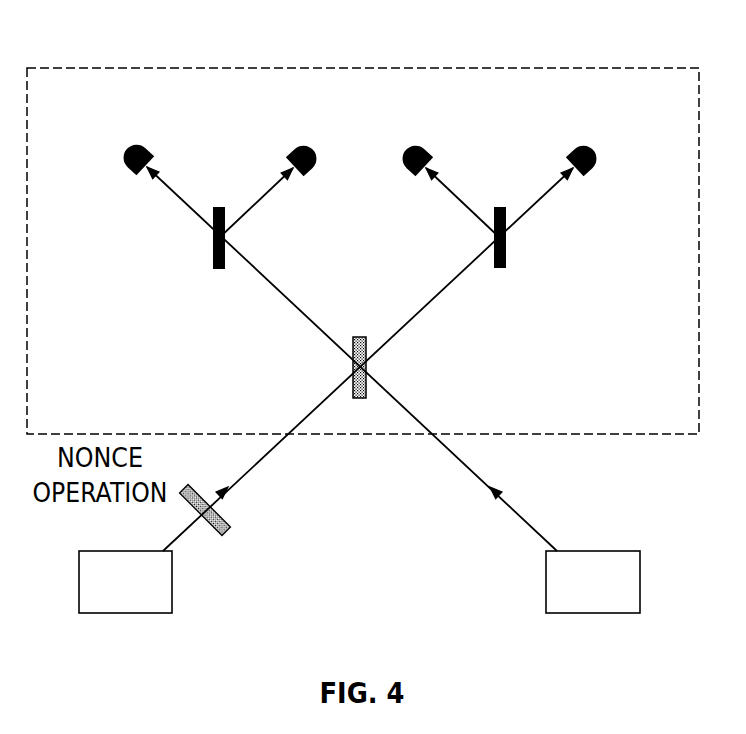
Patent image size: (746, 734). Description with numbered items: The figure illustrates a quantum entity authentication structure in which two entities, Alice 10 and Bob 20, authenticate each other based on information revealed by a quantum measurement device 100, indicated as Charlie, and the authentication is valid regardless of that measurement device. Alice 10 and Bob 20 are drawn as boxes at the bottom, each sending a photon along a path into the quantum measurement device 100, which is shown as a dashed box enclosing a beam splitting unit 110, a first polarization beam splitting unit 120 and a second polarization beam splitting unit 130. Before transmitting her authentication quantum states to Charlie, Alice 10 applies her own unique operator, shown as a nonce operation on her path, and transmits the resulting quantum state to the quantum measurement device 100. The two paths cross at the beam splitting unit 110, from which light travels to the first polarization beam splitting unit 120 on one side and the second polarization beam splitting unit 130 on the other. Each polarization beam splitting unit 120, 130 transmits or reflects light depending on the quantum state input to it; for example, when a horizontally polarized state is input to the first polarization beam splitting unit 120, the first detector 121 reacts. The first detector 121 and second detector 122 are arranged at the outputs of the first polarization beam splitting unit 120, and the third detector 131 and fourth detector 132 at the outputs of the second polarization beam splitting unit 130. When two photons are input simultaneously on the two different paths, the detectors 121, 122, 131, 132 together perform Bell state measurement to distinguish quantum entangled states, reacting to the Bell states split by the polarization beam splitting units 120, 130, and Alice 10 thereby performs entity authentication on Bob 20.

The quantum measurement device 100 is at (367, 68).
The entity 10 is at (172, 582).
The entity 20 is at (640, 582).
The beam splitting unit 110 is at (359, 337).
The first polarization beam splitting unit 120 is at (213, 250).
The detector D1 121 is at (119, 162).
The detector D2 122 is at (316, 172).
The second polarization beam splitting unit 130 is at (506, 242).
The detector D3 131 is at (403, 157).
The detector D4 132 is at (598, 163).